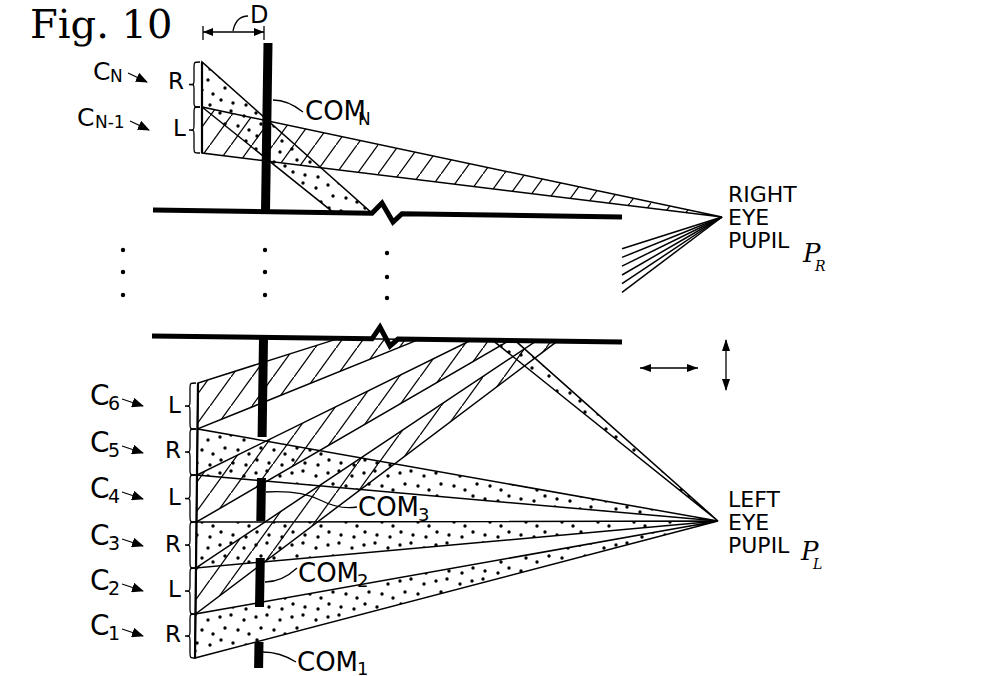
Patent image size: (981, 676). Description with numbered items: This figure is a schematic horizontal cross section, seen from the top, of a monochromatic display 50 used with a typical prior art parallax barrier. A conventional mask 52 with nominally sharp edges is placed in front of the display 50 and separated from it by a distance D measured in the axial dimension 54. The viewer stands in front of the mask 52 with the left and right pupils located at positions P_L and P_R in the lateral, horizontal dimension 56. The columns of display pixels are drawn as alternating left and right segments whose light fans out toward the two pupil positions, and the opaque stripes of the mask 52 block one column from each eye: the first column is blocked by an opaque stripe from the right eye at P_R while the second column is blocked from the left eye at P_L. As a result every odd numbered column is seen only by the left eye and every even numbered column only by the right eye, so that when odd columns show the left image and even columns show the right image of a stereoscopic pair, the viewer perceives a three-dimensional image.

The monochromatic display 50 is at (202, 60).
The conventional mask 52 is at (273, 67).
The axial dimension 54 is at (670, 367).
The lateral (horizontal) dimension 56 is at (728, 366).